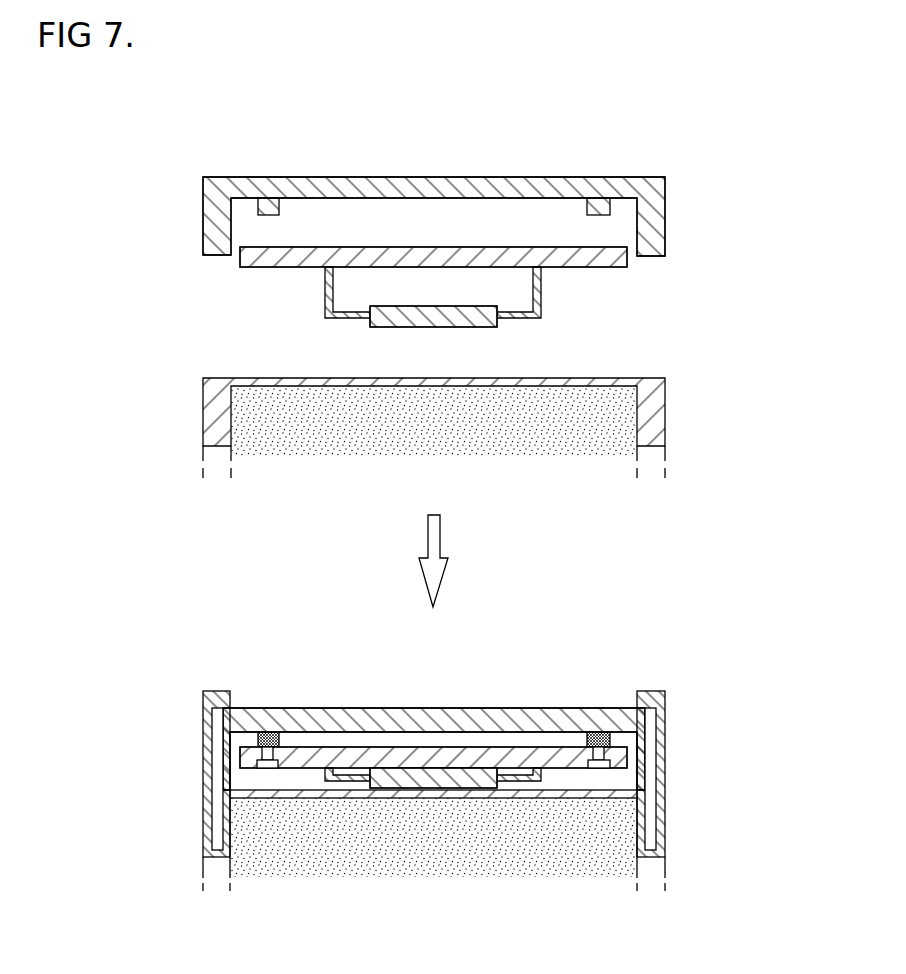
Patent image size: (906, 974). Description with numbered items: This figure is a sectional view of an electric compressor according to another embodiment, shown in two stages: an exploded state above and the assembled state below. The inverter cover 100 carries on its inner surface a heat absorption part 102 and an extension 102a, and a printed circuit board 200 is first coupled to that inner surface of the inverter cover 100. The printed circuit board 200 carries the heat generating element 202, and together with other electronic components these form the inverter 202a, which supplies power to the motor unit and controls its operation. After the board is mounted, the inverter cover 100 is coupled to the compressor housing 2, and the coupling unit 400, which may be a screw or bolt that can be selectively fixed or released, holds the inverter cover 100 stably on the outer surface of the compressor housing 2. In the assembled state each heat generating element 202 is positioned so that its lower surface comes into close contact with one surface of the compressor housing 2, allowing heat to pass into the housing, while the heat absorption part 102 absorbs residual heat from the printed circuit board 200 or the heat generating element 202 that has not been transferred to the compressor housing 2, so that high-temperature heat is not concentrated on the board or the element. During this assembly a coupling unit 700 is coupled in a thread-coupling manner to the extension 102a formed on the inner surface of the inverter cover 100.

The compressor housing 2 is at (684, 417).
The inverter cover 100 is at (484, 177).
The heat absorption part 102 is at (333, 198).
The extension 102a is at (587, 206).
The printed circuit board 200 is at (360, 237).
The heat generating element 202 is at (432, 306).
The inverter 202a is at (482, 119).
The coupling unit 400 is at (660, 677).
The coupling unit 700 is at (626, 762).